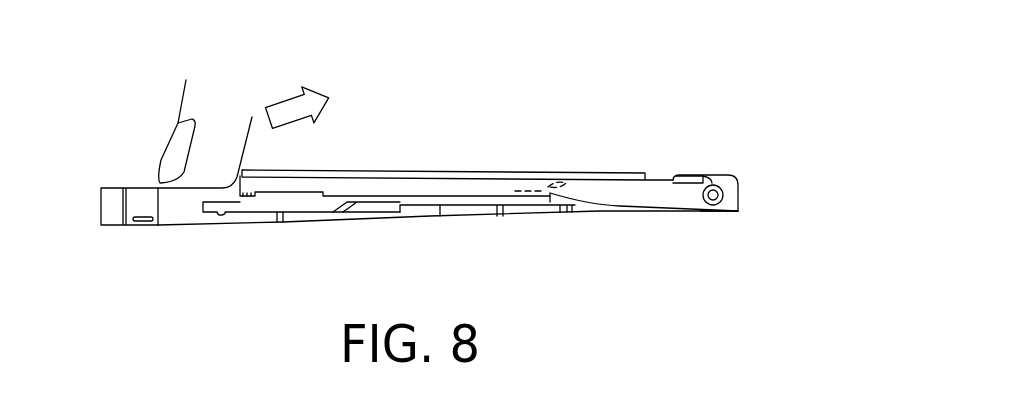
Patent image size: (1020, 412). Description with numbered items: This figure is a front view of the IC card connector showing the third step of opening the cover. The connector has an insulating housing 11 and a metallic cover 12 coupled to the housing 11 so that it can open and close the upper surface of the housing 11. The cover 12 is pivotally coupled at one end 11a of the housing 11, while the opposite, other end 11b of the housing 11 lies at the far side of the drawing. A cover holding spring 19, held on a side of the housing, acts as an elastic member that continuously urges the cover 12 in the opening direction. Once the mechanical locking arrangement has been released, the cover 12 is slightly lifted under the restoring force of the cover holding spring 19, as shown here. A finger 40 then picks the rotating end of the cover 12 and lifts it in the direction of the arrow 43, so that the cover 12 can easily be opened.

The housing 11 is at (177, 207).
The one end of the housing 11a is at (739, 193).
The other end of the housing 11b is at (100, 204).
The metallic cover 12 is at (478, 166).
The cover holding spring 19 is at (533, 189).
The finger 40 is at (197, 103).
The arrow 43 is at (287, 103).